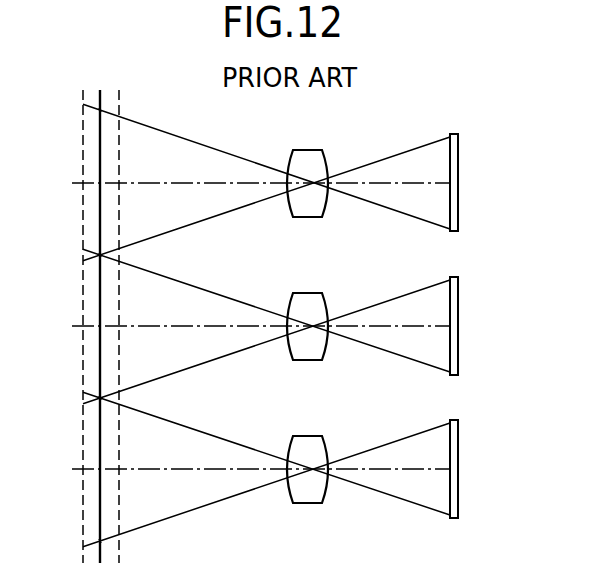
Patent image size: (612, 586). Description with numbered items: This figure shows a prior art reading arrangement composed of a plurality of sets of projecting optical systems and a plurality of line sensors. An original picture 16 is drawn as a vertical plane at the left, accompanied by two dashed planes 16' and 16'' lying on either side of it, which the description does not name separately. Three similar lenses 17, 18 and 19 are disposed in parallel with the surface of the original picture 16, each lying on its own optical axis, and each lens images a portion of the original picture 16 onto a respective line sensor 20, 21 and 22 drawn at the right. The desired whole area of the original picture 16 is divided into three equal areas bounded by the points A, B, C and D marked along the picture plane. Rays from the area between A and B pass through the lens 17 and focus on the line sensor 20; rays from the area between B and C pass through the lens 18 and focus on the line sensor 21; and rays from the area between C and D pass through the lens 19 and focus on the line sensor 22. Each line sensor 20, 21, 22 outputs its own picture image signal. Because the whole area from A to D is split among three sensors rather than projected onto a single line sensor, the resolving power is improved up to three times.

The original picture 16 is at (101, 298).
The rear surface plane of plate 16 16' is at (133, 311).
The front surface plane of plate 16 16'' is at (73, 311).
The lens 17 is at (302, 150).
The lens 18 is at (302, 293).
The lens 19 is at (302, 436).
The line sensor 20 is at (458, 183).
The line sensor 21 is at (458, 326).
The line sensor 22 is at (458, 469).
The area A is at (100, 110).
The area B is at (100, 255).
The area C is at (100, 398).
The area D is at (100, 541).